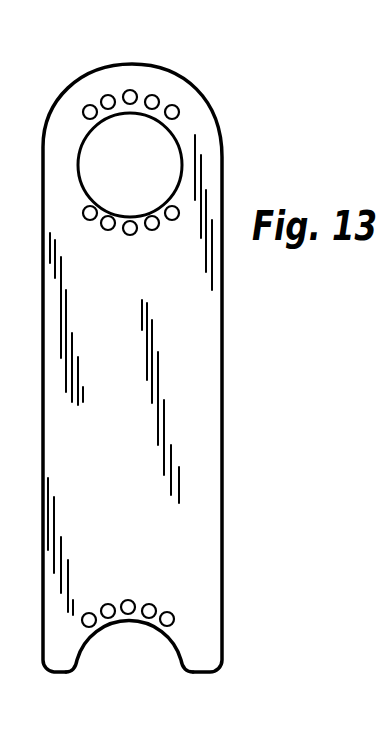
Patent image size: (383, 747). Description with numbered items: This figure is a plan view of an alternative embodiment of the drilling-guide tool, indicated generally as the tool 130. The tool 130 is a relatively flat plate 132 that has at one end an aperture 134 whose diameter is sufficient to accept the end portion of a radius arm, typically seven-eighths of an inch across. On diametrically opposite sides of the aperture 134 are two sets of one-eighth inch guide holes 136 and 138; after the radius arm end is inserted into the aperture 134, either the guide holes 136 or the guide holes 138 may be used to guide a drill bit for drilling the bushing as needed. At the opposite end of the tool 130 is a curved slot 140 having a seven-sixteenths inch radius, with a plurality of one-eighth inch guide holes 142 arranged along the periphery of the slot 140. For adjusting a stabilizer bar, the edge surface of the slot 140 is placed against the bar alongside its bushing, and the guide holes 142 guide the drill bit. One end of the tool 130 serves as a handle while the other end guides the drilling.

The tool 130 is at (183, 368).
The plate 132 is at (225, 322).
The aperture 134 is at (170, 147).
The guide holes 136 is at (171, 105).
The guide holes 138 is at (92, 220).
The curved slot 140 is at (129, 621).
The guide holes 142 is at (90, 613).